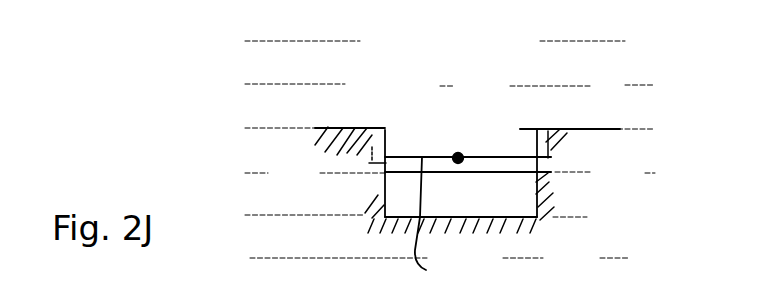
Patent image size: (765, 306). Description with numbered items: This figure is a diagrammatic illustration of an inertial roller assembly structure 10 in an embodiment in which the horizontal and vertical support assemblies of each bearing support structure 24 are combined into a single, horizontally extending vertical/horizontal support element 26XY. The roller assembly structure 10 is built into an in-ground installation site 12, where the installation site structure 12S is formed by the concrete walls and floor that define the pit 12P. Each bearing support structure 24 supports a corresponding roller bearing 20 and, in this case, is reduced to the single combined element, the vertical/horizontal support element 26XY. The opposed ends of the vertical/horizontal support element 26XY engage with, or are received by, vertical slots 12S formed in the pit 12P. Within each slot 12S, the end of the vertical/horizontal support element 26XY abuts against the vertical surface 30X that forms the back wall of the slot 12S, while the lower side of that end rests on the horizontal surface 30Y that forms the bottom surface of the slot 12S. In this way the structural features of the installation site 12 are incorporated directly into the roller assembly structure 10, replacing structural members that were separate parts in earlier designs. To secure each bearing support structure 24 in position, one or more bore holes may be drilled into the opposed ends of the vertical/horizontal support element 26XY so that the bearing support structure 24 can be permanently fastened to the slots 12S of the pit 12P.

The roller assembly structure 10 is at (418, 51).
The installation site 12 is at (562, 61).
The pit 12P is at (491, 97).
The installation site structure 12S is at (533, 144).
The roller bearing 20 is at (458, 163).
The bearing support structure 24 is at (446, 126).
The vertical/horizontal support element 26XY is at (452, 223).
The vertical surface 30X is at (383, 172).
The horizontal surface 30Y is at (380, 178).